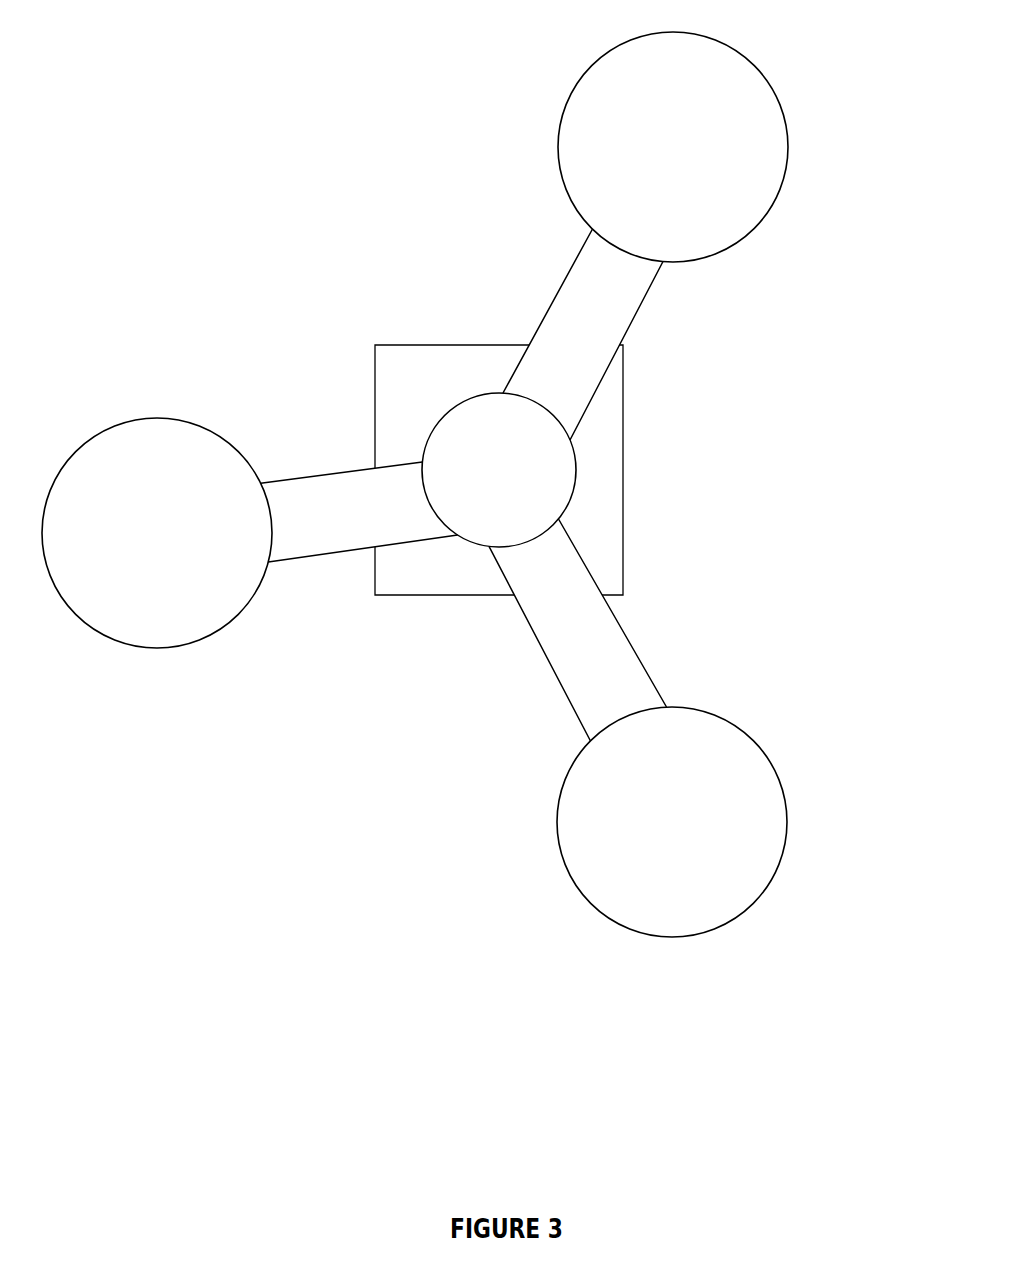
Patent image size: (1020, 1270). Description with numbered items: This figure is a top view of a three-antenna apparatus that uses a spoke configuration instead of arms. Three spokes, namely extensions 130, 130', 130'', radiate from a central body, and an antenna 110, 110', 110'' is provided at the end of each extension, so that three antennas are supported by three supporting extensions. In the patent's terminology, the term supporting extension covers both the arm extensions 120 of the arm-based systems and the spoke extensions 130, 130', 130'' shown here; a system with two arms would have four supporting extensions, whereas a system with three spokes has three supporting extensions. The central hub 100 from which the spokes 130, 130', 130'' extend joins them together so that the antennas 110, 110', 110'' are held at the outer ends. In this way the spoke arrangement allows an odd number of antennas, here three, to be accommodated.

The antenna 110 is at (704, 131).
The antenna 110' is at (722, 822).
The antenna 110'' is at (157, 600).
The extension 130 is at (628, 334).
The extension 130' is at (614, 630).
The extension 130'' is at (359, 568).
The extension 120 is at (499, 470).
The central hub 100 is at (499, 470).